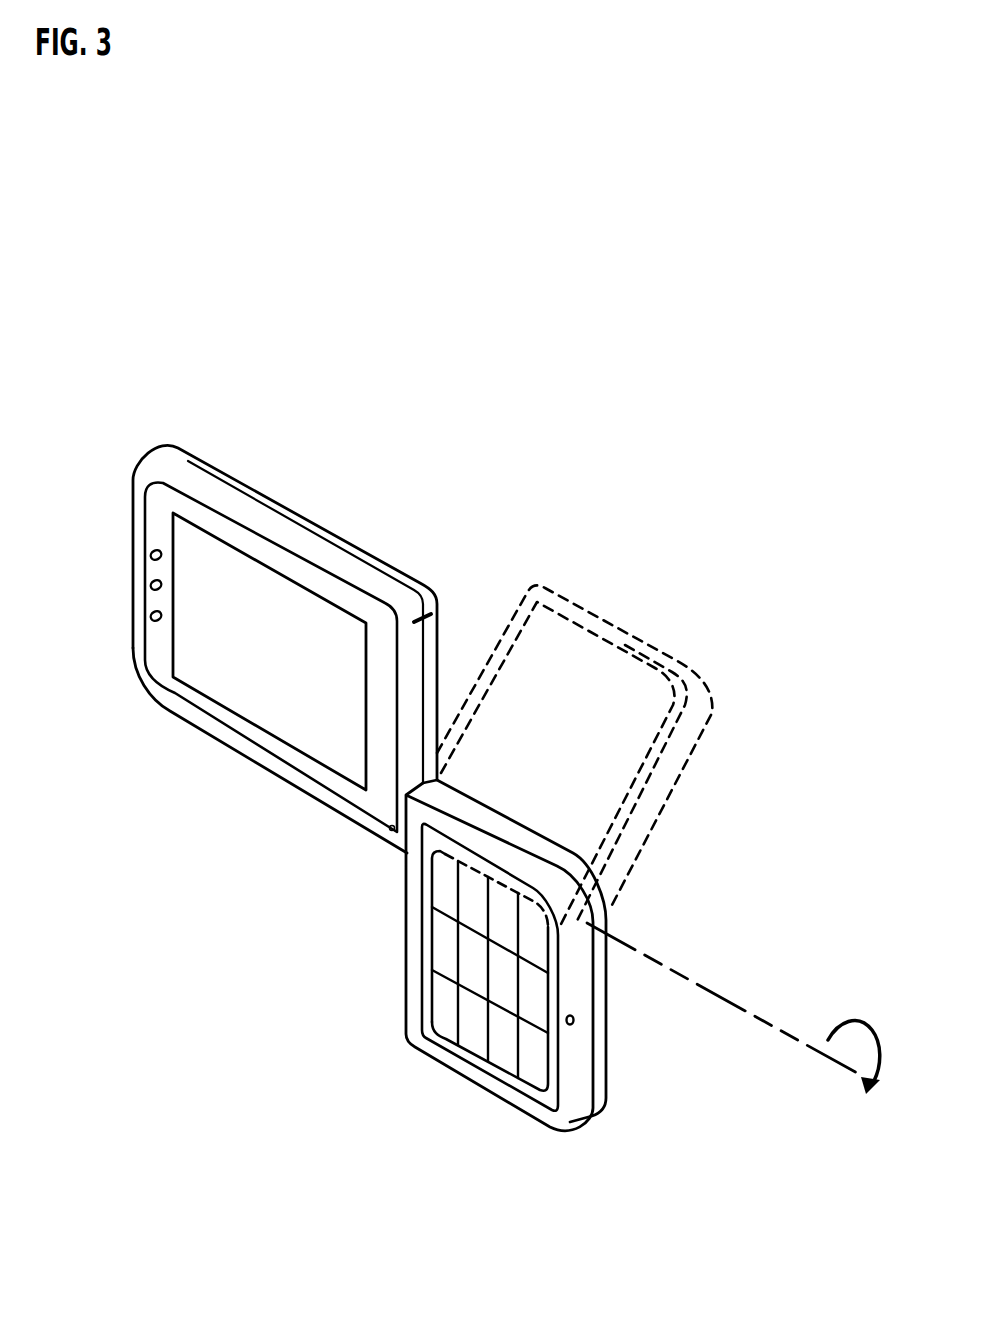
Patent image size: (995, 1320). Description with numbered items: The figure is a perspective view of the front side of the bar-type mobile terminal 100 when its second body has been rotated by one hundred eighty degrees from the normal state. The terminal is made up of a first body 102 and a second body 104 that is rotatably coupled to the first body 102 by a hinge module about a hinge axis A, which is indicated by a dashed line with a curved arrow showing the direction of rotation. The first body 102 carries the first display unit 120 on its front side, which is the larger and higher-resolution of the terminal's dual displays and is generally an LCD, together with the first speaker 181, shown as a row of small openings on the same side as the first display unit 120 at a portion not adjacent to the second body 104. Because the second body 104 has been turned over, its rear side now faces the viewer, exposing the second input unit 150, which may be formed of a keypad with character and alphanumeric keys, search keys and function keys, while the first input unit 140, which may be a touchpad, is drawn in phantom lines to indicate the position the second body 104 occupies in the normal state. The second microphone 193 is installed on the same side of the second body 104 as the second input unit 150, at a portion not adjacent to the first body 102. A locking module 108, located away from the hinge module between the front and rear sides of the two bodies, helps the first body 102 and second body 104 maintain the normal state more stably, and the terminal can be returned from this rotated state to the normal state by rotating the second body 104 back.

The mobile terminal 100 is at (558, 482).
The first body 102 is at (235, 768).
The second body 104 is at (474, 1097).
The locking module 108 is at (430, 615).
The first display unit 120 is at (259, 583).
The first input unit 140 is at (612, 652).
The second input unit 150 is at (439, 949).
The first speaker 181 is at (150, 555).
The second microphone 193 is at (575, 1021).
The hinge axis A is at (743, 1007).